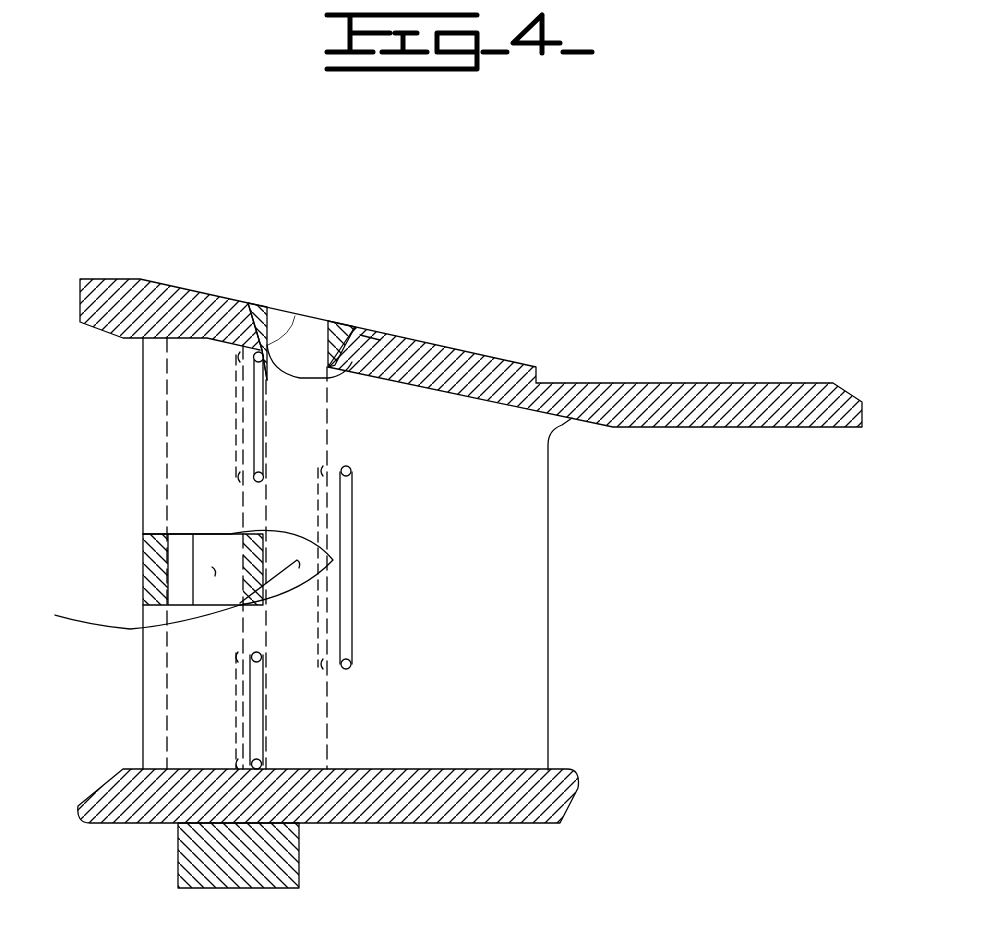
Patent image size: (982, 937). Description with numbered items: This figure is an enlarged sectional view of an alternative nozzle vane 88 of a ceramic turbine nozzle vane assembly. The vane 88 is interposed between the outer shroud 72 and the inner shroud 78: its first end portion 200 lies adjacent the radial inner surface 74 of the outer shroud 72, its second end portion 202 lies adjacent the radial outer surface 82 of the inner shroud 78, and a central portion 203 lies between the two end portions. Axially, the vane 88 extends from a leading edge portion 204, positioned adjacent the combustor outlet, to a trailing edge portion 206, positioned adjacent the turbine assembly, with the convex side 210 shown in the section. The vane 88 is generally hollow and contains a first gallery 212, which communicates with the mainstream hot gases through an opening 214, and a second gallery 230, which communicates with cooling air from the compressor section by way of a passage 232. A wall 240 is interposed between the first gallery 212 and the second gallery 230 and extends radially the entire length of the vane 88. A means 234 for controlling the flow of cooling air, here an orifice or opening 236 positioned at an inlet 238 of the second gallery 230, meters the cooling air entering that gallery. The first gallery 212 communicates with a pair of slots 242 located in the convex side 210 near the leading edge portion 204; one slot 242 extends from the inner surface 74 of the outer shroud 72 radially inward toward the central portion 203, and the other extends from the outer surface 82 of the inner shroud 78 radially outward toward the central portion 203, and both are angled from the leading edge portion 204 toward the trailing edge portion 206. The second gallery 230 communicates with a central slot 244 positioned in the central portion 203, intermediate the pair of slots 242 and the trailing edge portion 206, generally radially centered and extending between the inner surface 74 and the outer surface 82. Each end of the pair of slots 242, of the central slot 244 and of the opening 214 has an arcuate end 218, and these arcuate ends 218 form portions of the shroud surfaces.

The means for controlling the flow of cooling air 234 is at (205, 237).
The opening 236 is at (280, 310).
The inlet 238 is at (295, 316).
The passage 232 is at (268, 345).
The outer shroud 72 is at (383, 357).
The radial inner surface 74 is at (395, 383).
The first end portion 200 is at (470, 390).
The arcuate end 218 is at (240, 358).
The pair of slots 242 is at (250, 418).
The leading edge portion 204 is at (143, 499).
The opening 214 is at (178, 547).
The first gallery 212 is at (212, 567).
The second gallery 230 is at (170, 579).
The wall 240 is at (255, 560).
The central slot 244 is at (350, 568).
The vane 88 is at (472, 570).
The trailing edge portion 206 is at (548, 492).
The central portion 203 is at (528, 541).
The convex side 210 is at (489, 645).
The radial outer surface 82 is at (400, 770).
The inner shroud 78 is at (340, 805).
The second end portion 202 is at (493, 770).